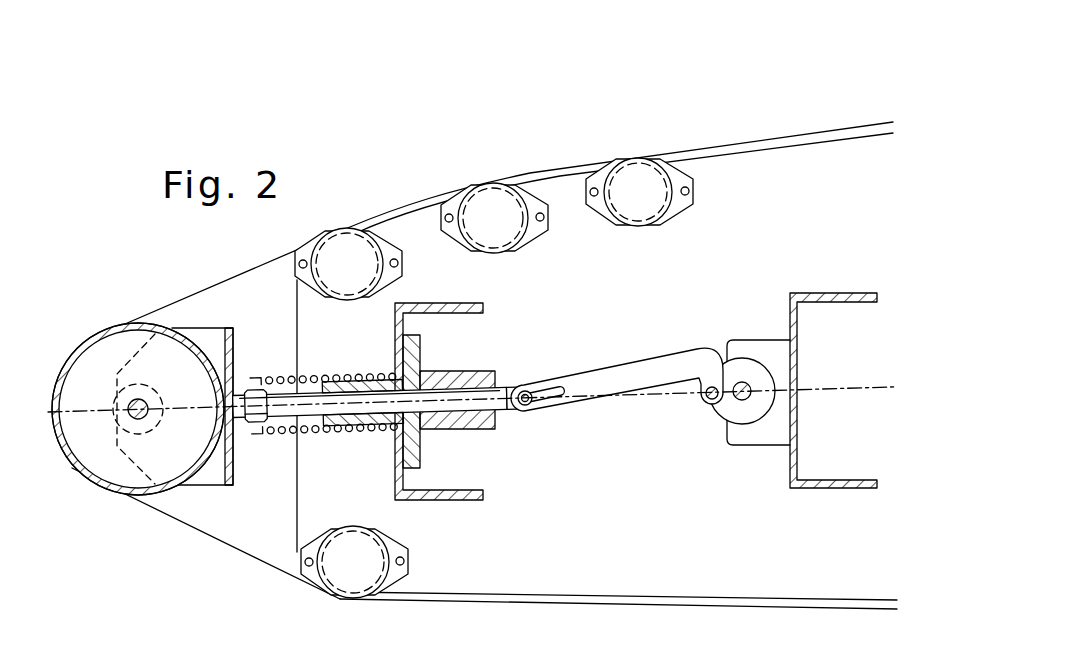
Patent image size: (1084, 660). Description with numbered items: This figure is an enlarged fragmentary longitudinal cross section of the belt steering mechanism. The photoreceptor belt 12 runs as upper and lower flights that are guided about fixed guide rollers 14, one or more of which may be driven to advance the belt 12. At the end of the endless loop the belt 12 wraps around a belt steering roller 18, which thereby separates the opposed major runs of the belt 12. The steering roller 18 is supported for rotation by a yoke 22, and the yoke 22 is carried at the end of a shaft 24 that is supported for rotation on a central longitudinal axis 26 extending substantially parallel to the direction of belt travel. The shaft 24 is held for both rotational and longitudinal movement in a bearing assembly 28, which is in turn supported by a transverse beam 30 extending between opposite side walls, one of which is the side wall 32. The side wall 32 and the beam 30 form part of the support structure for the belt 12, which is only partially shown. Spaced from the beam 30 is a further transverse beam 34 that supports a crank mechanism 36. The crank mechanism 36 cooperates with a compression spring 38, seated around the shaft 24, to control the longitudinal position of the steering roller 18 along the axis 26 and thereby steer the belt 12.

The photoreceptor belt 12 is at (396, 208).
The guide rollers 14 is at (357, 280).
The belt steering roller 18 is at (138, 320).
The yoke 22 is at (221, 330).
The shaft 24 is at (431, 396).
The central longitudinal axis 26 is at (634, 398).
The bearing assembly 28 is at (429, 441).
The transverse beam 30 is at (453, 499).
The side wall 32 is at (565, 306).
The transverse beam 34 is at (792, 467).
The crank mechanism 36 is at (720, 341).
The compression spring 38 is at (313, 378).